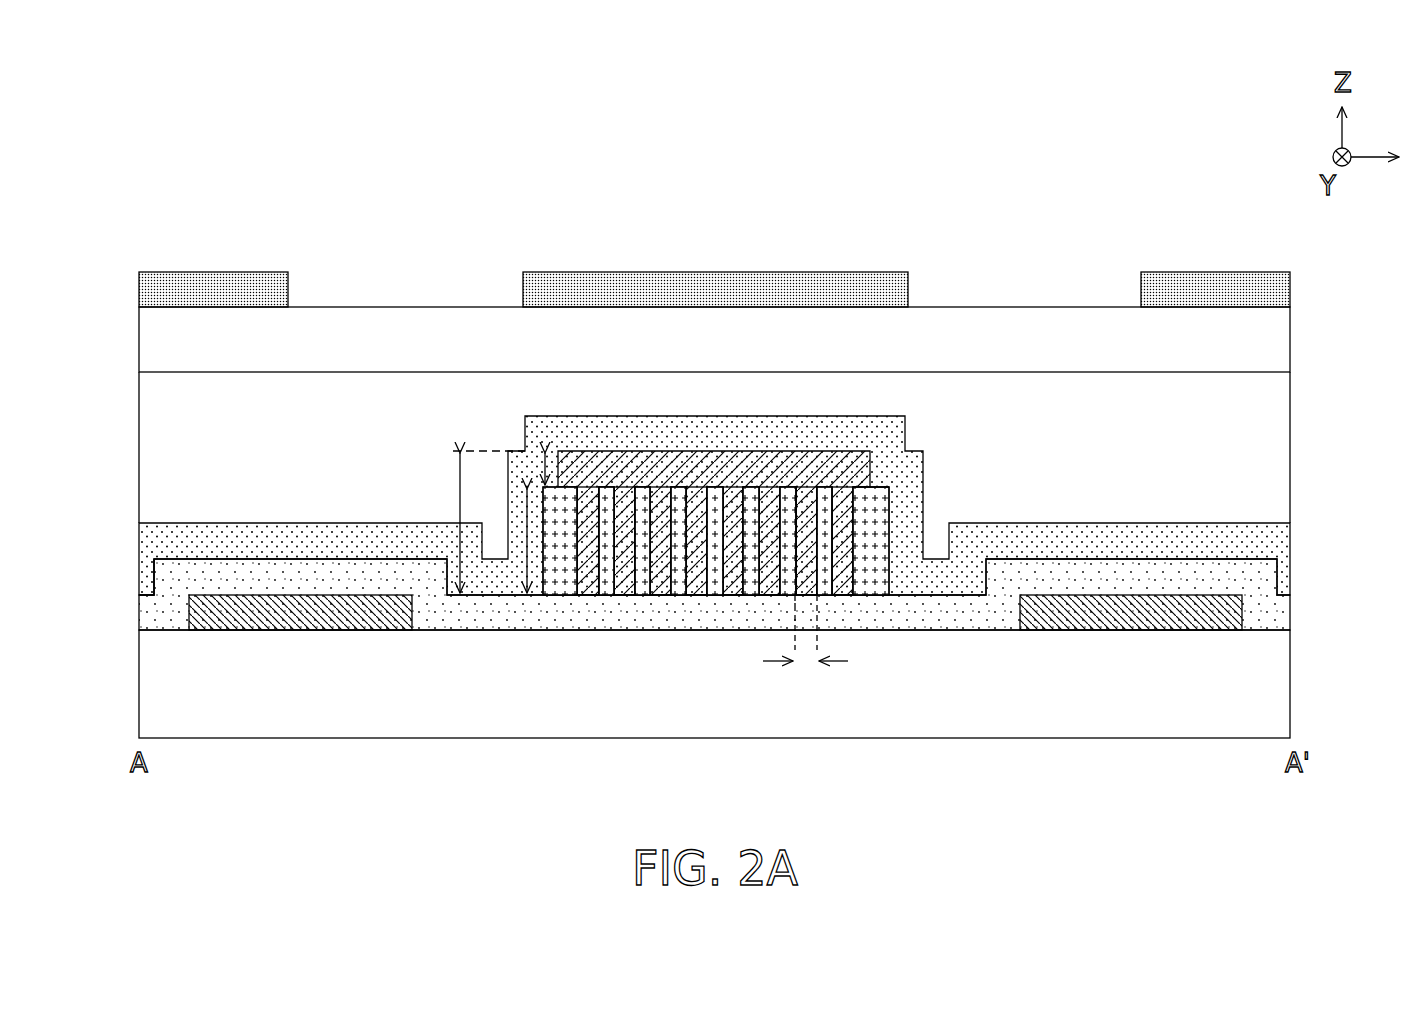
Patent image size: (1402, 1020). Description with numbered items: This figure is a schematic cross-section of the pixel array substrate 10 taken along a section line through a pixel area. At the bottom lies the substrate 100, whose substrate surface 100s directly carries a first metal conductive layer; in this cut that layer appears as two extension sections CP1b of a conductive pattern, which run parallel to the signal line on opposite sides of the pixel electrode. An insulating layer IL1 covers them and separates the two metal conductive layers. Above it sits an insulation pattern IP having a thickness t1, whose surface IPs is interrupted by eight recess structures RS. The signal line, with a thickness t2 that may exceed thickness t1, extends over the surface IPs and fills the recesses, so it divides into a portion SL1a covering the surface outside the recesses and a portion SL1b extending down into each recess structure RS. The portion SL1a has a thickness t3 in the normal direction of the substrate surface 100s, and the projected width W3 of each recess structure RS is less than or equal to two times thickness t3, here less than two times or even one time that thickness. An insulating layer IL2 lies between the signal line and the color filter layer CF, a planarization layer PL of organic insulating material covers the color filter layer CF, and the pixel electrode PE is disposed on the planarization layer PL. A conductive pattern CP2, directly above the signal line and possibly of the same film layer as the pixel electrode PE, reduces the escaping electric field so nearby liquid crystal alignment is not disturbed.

The pixel electrode PE is at (200, 272).
The conductive pattern CP2 is at (811, 278).
The portion of the signal line SL1a is at (660, 470).
The portion of the signal line SL1b is at (735, 592).
The planarization layer PL is at (1290, 338).
The color filter layer CF is at (1290, 445).
The insulating layer IL2 is at (1290, 542).
The insulating layer IL1 is at (1290, 612).
The substrate 100 is at (1290, 683).
The substrate surface 100s is at (164, 626).
The extension section CP1b is at (293, 620).
The insulation pattern IP is at (875, 592).
The surface IPs is at (871, 482).
The recess structure RS is at (800, 517).
The thickness t1 is at (528, 541).
The thickness t2 is at (478, 522).
The thickness t3 is at (545, 470).
The width W3 is at (805, 648).
The pixel array substrate 10 is at (1401, 810).